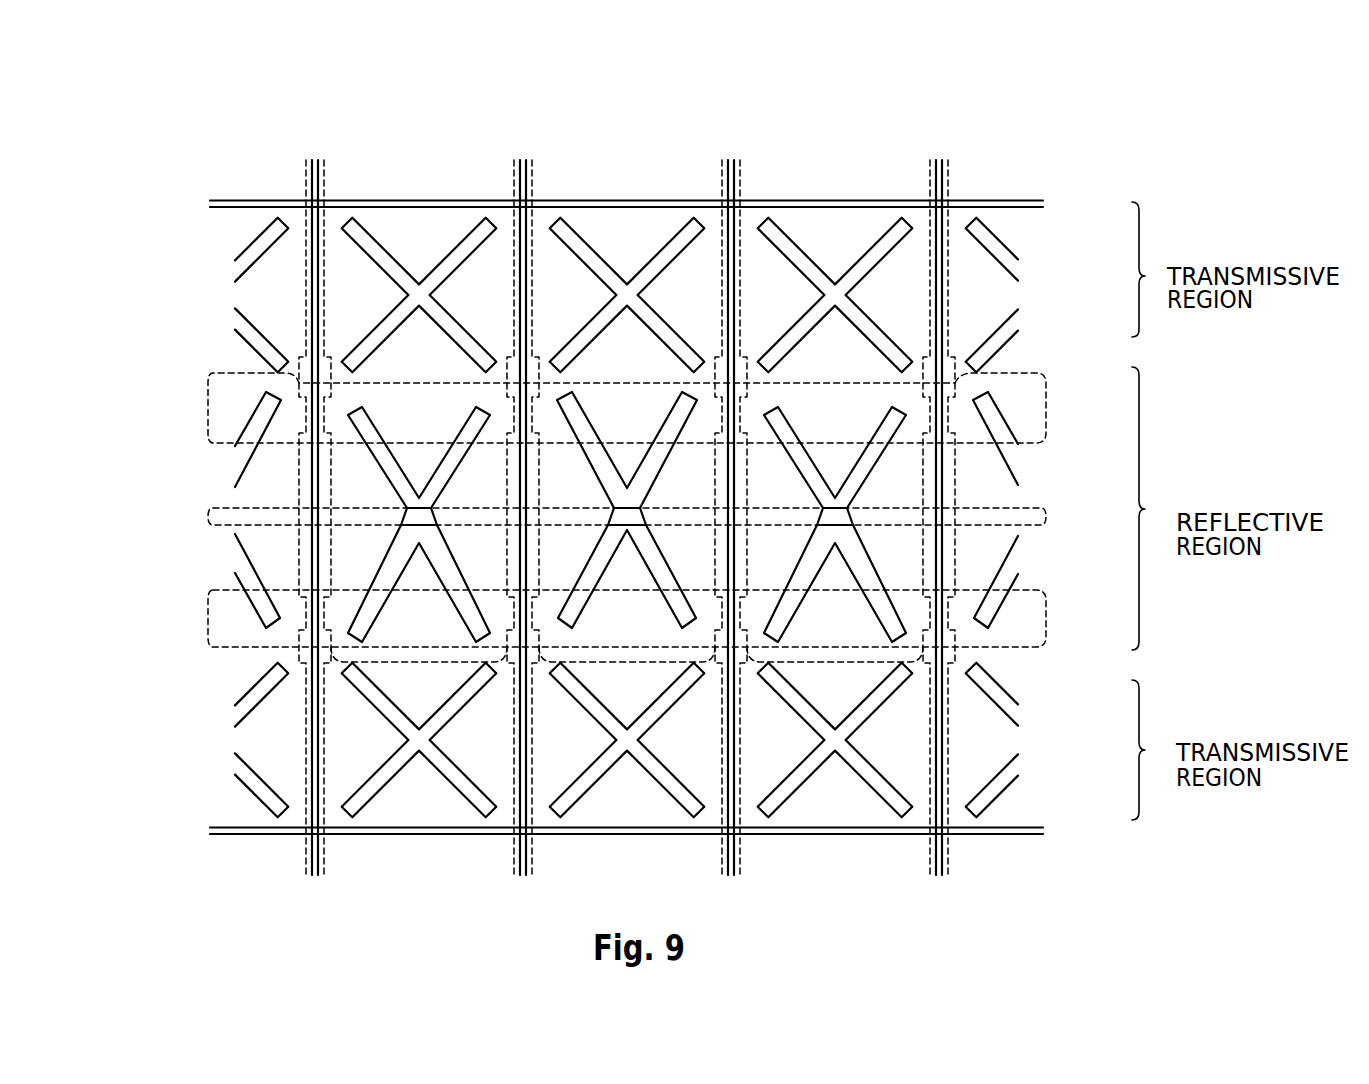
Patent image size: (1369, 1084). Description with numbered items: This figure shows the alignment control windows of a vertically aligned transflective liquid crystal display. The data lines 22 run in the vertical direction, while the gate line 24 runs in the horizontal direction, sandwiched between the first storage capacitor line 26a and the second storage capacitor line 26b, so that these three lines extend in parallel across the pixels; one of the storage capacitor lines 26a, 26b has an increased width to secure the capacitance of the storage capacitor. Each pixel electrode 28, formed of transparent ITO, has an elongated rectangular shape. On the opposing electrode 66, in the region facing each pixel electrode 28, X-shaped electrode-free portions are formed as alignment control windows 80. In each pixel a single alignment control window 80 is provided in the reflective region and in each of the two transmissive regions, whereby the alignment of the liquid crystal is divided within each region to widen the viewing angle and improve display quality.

The data line 22 is at (327, 180).
The gate line 24 is at (208, 517).
The first storage capacitor line 26a is at (210, 407).
The second storage capacitor line 26b is at (210, 628).
The pixel electrode 28 is at (433, 200).
The opposing electrode 66 is at (208, 218).
The alignment control window 80 is at (847, 257).